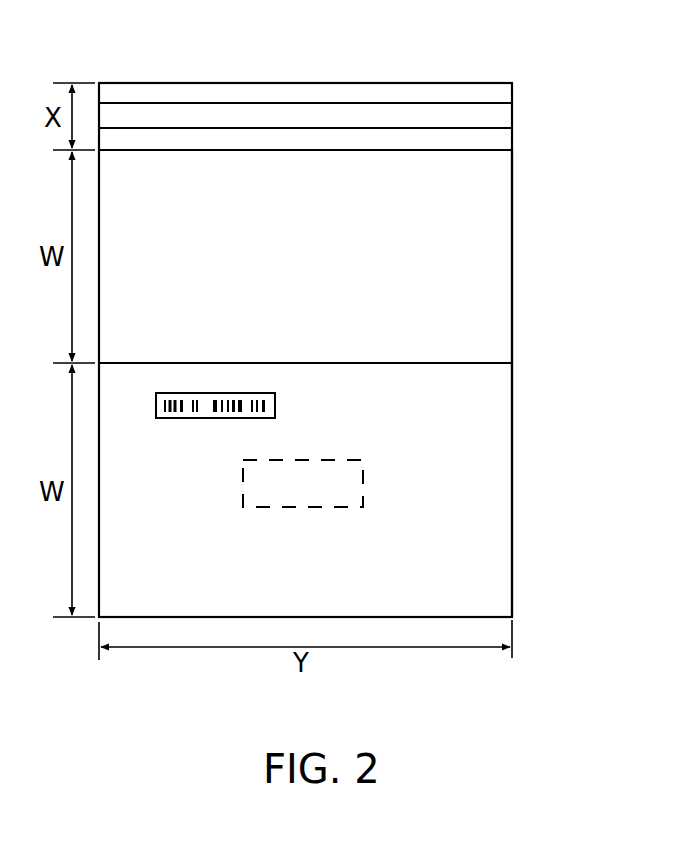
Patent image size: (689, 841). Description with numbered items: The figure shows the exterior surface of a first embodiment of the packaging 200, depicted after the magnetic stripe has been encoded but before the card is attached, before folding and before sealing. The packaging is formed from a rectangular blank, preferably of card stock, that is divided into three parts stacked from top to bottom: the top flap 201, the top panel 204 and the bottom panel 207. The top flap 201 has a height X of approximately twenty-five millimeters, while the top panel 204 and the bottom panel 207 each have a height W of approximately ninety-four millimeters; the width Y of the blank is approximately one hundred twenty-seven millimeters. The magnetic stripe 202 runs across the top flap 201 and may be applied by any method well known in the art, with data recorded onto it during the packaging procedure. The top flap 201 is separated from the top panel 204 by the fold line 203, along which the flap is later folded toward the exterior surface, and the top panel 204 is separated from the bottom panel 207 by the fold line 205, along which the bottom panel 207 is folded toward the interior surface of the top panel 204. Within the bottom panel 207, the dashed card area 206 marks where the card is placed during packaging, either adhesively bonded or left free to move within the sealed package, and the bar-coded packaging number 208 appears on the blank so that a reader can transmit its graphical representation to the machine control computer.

The packaging 200 is at (412, 74).
The top flap 201 is at (507, 97).
The magnetic stripe 202 is at (505, 122).
The fold line 203 is at (505, 149).
The top panel 204 is at (500, 255).
The fold line 205 is at (488, 363).
The card area 206 is at (355, 478).
The bottom panel 207 is at (500, 543).
The packaging number 208 is at (275, 406).